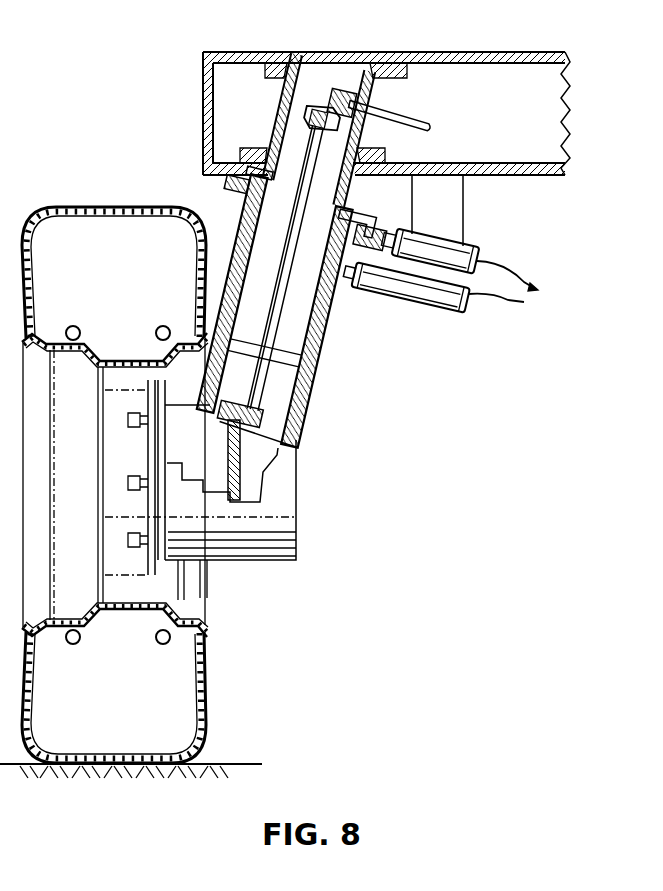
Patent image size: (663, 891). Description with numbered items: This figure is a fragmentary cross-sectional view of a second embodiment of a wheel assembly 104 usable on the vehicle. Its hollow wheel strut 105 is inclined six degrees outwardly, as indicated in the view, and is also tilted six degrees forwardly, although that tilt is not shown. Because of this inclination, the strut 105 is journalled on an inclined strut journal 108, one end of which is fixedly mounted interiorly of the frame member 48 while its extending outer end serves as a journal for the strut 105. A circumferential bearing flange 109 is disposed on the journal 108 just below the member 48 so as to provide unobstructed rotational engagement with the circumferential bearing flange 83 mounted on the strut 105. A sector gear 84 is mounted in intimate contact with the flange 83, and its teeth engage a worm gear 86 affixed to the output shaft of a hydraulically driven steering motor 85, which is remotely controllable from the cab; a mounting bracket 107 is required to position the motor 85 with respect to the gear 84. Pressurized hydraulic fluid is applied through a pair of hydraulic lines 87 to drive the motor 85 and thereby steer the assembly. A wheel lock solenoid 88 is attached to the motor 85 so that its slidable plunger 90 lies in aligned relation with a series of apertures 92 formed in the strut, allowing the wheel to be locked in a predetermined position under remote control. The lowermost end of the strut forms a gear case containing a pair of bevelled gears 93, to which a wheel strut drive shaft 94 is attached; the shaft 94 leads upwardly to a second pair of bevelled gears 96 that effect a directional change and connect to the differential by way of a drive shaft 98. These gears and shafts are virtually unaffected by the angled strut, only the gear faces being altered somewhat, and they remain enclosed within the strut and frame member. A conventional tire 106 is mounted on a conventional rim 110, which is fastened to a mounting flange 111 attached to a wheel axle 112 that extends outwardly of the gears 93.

The member 48 is at (497, 52).
The circumferential bearing flange 83 is at (234, 177).
The sector gear 84 is at (230, 186).
The steering motor 85 is at (480, 240).
The worm gear 86 is at (378, 228).
The hydraulic lines 87 is at (534, 282).
The wheel lock solenoid 88 is at (472, 302).
The plunger 90 is at (352, 282).
The apertures 92 is at (273, 338).
The bevelled gears 93 is at (295, 448).
The wheel strut drive shaft 94 is at (297, 358).
The bevelled gears 96 is at (318, 108).
The drive shaft 98 is at (422, 120).
The wheel assembly 104 is at (536, 428).
The hollow wheel strut 105 is at (313, 396).
The tire 106 is at (208, 704).
The mounting bracket 107 is at (464, 200).
The inclined strut journal 108 is at (285, 96).
The circumferential bearing flange 109 is at (358, 202).
The rim 110 is at (210, 588).
The mounting flange 111 is at (162, 424).
The wheel axle 112 is at (213, 474).